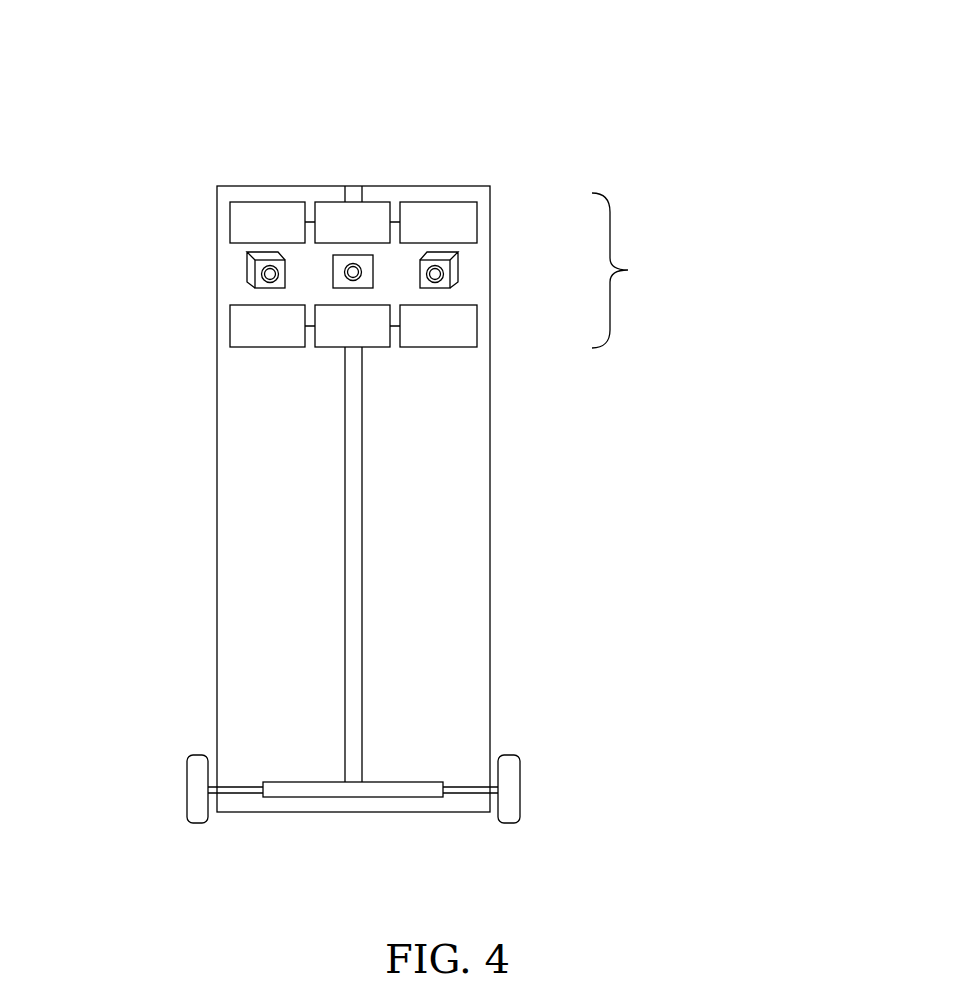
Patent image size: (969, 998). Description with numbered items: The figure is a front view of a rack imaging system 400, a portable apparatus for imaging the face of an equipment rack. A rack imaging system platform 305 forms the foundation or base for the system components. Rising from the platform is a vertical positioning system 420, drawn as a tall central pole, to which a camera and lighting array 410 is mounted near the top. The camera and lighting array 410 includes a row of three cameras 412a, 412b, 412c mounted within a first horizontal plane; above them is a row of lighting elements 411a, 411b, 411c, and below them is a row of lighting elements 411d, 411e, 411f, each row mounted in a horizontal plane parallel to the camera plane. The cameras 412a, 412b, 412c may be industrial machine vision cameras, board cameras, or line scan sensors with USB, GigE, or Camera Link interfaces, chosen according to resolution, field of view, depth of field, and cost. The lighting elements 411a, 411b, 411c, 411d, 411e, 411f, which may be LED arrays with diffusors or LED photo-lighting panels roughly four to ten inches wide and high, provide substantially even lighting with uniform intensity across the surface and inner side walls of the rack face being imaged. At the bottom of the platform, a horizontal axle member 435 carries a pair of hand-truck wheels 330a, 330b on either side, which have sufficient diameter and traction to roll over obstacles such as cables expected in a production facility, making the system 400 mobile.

The rack imaging system 400 is at (143, 57).
The rack imaging system platform 305 is at (491, 485).
The camera and lighting array 410 is at (477, 269).
The lighting element 411a is at (268, 228).
The lighting element 411b is at (352, 228).
The lighting element 411c is at (440, 226).
The lighting element 411d is at (256, 327).
The lighting element 411e is at (333, 320).
The lighting element 411f is at (438, 325).
The camera 412a is at (248, 272).
The camera 412b is at (366, 273).
The camera 412c is at (463, 268).
The vertical positioning system 420 is at (363, 563).
The axle housing 435 is at (413, 781).
The hand-truck wheel 330a is at (187, 788).
The hand-truck wheel 330b is at (521, 789).